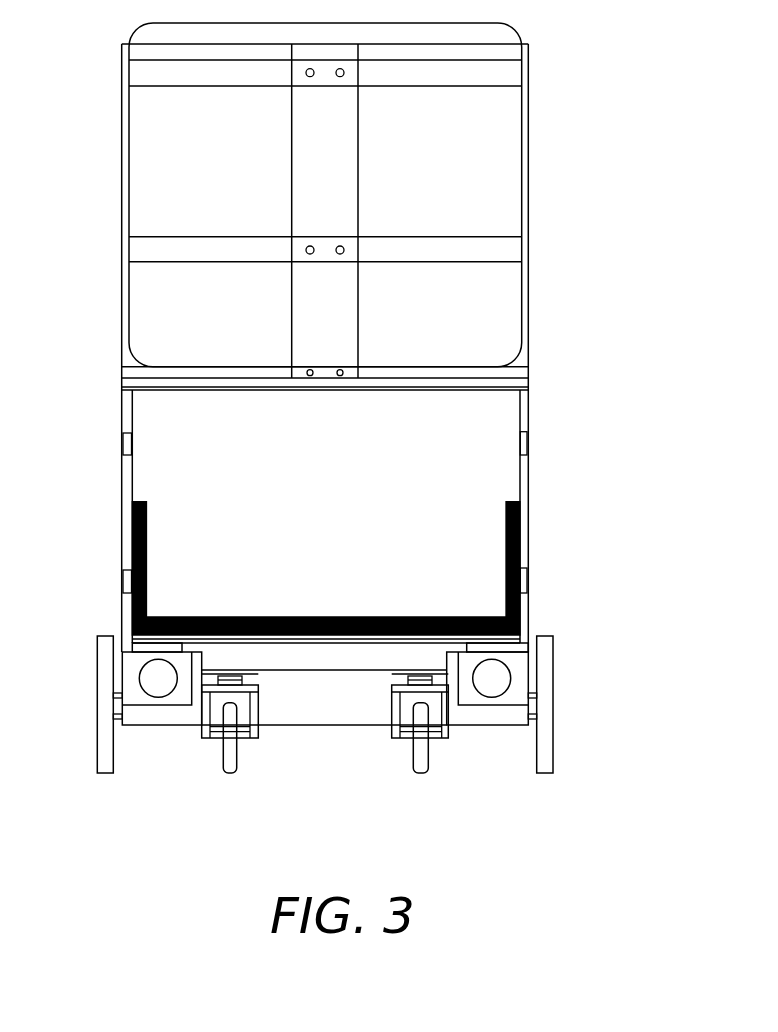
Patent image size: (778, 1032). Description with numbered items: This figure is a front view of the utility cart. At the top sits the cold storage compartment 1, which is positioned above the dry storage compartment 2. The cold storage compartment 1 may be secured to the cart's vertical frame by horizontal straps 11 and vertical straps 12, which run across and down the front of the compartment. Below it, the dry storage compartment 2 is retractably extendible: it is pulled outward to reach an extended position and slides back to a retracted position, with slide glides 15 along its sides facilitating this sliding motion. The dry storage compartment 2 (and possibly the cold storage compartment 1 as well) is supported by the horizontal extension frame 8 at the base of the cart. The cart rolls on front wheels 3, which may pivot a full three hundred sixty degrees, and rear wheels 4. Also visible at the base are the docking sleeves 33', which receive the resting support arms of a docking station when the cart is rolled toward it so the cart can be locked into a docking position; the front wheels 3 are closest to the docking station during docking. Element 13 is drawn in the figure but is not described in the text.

The cold storage compartment 1 is at (173, 150).
The dry storage compartment 2 is at (264, 440).
The front wheels 3 is at (227, 772).
The rear wheels 4 is at (103, 676).
The horizontal extension frame 8 is at (373, 658).
The horizontal straps 11 is at (382, 249).
The vertical straps 12 is at (338, 148).
The hopper liner 13 is at (147, 532).
The slide glides 15 is at (132, 448).
The docking sleeves 33' is at (358, 738).